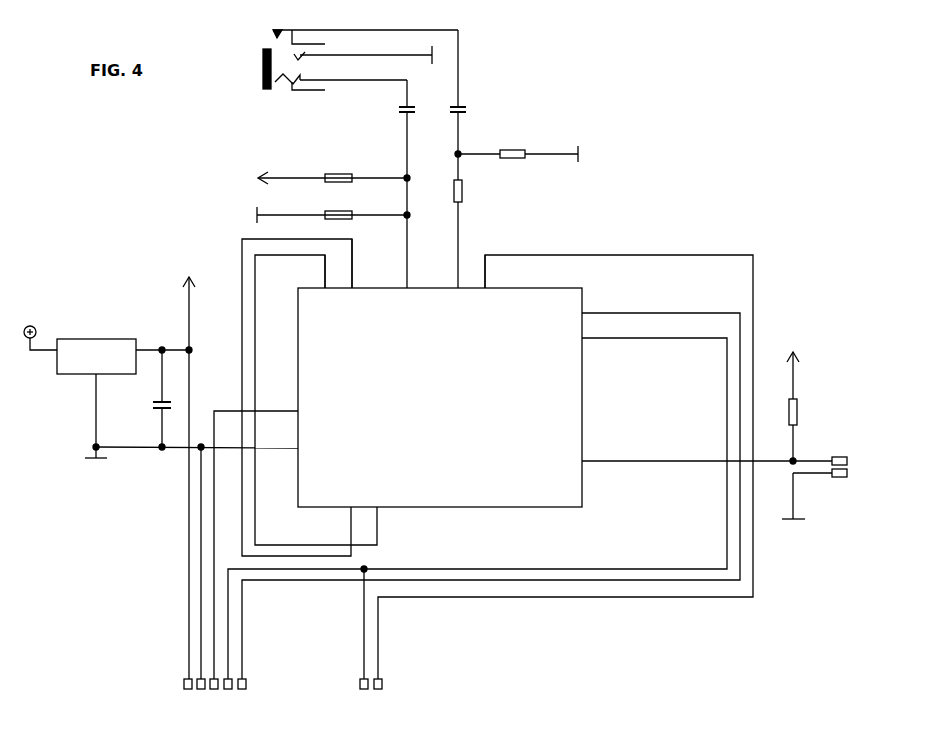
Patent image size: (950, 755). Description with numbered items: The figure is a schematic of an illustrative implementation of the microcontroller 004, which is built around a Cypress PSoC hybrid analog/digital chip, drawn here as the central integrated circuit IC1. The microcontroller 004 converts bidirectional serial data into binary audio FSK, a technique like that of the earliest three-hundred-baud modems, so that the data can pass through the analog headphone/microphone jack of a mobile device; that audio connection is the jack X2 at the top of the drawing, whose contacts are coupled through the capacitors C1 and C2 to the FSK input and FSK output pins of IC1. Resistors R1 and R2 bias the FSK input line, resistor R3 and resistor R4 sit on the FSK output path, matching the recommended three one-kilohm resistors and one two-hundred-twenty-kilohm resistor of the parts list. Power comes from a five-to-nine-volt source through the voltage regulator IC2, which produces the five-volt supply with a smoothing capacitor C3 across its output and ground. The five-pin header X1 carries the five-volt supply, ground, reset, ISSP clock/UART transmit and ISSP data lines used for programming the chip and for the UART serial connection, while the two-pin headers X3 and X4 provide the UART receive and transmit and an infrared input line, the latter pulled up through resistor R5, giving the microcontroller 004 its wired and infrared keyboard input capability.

The microcontroller 004 is at (660, 138).
The audio jack connector 1503_11 X2 is at (360, 59).
The capacitor 0.2 uF C1 is at (388, 184).
The capacitor 0.1 uF C2 is at (474, 105).
The capacitor 1 uF C3 is at (150, 398).
The resistor 1K R1 is at (326, 217).
The resistor 1K R2 is at (334, 176).
The resistor 220k R3 is at (456, 232).
The resistor 1k R4 is at (524, 155).
The resistor 10k R5 is at (796, 406).
The microcontroller IC1 is at (440, 384).
The voltage regulator 78L05Z IC2 is at (105, 378).
The programming connector 22-23-2051 X1 is at (222, 656).
The connector 22-23-2021 X3 is at (378, 708).
The connector 22-23-2021 X4 is at (837, 488).